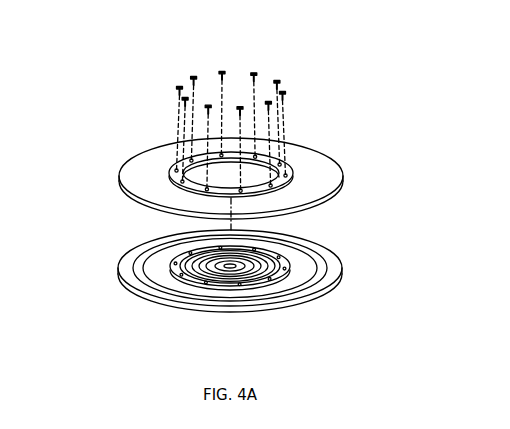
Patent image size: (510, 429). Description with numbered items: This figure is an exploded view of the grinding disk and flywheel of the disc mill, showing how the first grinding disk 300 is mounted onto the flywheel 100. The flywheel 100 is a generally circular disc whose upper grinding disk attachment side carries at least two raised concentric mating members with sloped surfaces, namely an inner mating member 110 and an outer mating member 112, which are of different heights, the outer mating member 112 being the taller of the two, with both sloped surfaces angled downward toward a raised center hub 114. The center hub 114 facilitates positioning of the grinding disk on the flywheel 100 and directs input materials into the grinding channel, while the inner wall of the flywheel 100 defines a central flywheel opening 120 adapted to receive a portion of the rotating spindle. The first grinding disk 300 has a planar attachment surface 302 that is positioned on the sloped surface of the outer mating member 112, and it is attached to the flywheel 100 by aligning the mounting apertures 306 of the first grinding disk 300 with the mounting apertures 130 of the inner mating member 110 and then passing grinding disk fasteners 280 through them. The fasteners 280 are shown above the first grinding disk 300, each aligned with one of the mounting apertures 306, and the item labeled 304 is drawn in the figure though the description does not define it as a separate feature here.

The flywheel 100 is at (205, 317).
The inner mating member 110 is at (176, 273).
The outer mating member 112 is at (130, 278).
The raised center hub 114 is at (208, 276).
The central flywheel opening 120 is at (233, 270).
The mounting apertures 130 is at (287, 278).
The grinding disk fasteners 280 is at (259, 73).
The first grinding disk 300 is at (153, 143).
The planar attachment surface 302 is at (332, 196).
The top surface of cover ring 304 is at (146, 186).
The mounting apertures 306 is at (291, 172).